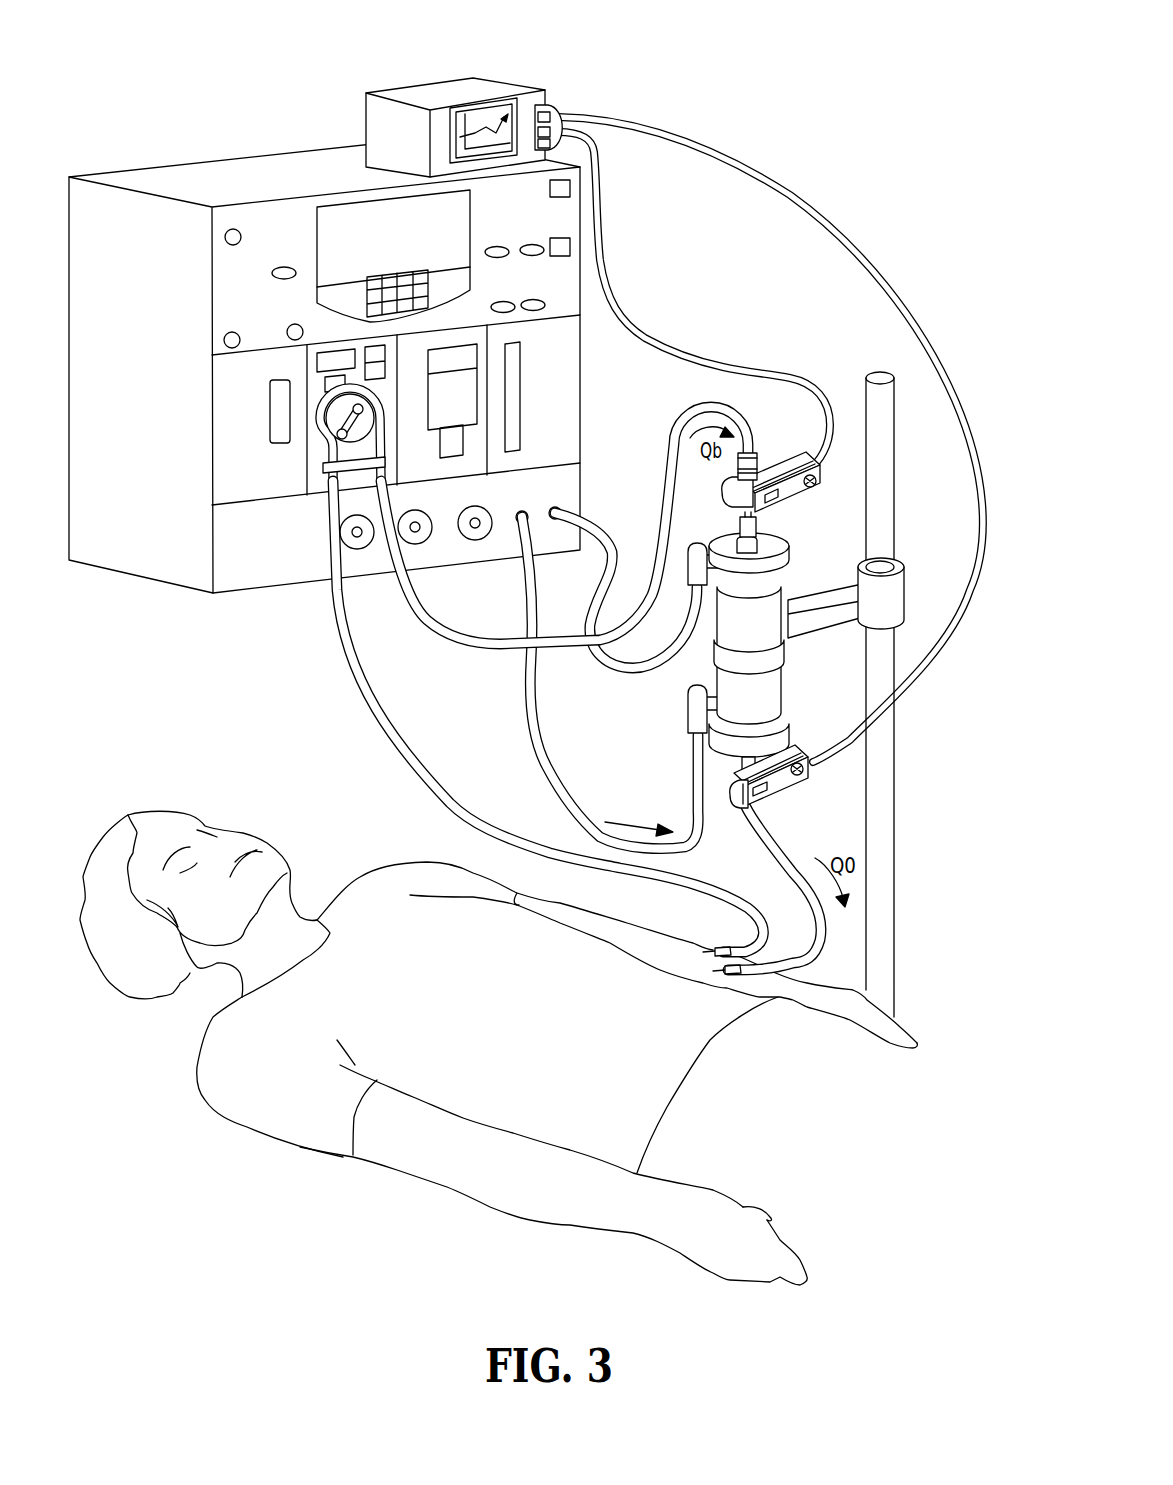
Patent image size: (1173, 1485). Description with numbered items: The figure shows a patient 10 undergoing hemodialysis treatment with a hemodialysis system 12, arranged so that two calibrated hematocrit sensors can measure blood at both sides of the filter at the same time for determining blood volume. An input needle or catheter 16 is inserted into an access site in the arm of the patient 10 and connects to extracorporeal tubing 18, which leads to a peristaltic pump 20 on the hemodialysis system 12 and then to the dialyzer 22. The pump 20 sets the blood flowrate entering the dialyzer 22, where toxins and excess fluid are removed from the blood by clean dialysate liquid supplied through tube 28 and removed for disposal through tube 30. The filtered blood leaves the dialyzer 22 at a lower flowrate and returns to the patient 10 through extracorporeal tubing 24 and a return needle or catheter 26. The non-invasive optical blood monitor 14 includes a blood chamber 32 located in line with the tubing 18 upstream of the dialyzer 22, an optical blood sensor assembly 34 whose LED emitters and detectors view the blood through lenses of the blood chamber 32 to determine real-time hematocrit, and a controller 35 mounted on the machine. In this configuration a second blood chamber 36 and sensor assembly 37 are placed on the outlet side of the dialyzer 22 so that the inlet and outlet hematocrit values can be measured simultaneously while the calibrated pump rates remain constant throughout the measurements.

The patient 10 is at (193, 1080).
The hemodialysis system 12 is at (151, 148).
The optical blood monitor 14 is at (559, 91).
The input needle or catheter 16 is at (713, 947).
The extracorporeal tubing 18 is at (342, 650).
The peristaltic pump 20 is at (326, 448).
The dialyzer 22 is at (777, 593).
The extracorporeal tubing 24 is at (780, 840).
The return needle or catheter 26 is at (713, 974).
The tube 28 is at (543, 766).
The tube 30 is at (603, 527).
The blood chamber 32 is at (753, 453).
The optical blood sensor assembly 34 is at (813, 488).
The controller 35 is at (432, 94).
The outlet connector 36 is at (743, 806).
The outlet flow sensor 37 is at (813, 773).